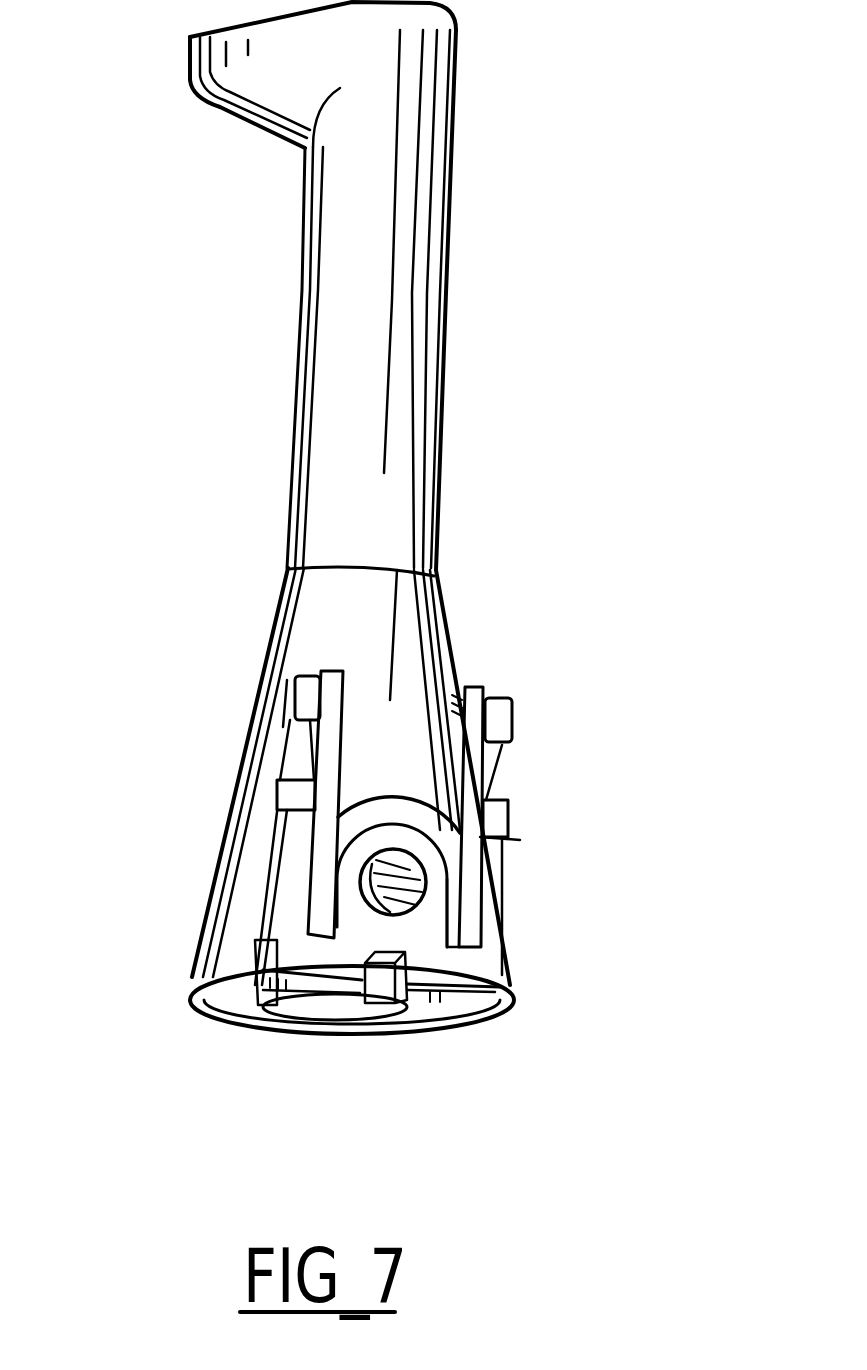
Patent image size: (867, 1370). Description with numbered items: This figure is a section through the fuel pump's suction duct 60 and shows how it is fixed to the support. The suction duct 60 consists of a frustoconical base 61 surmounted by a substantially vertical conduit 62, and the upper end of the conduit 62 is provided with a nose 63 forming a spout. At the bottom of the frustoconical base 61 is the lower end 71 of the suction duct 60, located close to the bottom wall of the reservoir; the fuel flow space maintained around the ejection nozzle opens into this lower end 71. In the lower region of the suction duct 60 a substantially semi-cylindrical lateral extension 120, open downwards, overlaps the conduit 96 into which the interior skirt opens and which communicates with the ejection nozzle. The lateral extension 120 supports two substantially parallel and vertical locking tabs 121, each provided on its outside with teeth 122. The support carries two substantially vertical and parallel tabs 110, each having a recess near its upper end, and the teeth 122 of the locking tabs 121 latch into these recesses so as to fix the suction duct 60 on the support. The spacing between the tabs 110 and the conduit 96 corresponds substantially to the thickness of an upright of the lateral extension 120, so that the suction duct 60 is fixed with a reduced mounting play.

The suction duct 60 is at (470, 314).
The frustoconical base 61 is at (225, 912).
The substantially vertical conduit 62 is at (330, 343).
The nose 63 is at (259, 88).
The lower end 71 is at (252, 995).
The conduit 96 is at (408, 880).
The tabs 110 is at (290, 869).
The lateral extension 120 is at (342, 838).
The locking tabs 121 is at (335, 670).
The teeth 122 is at (293, 722).